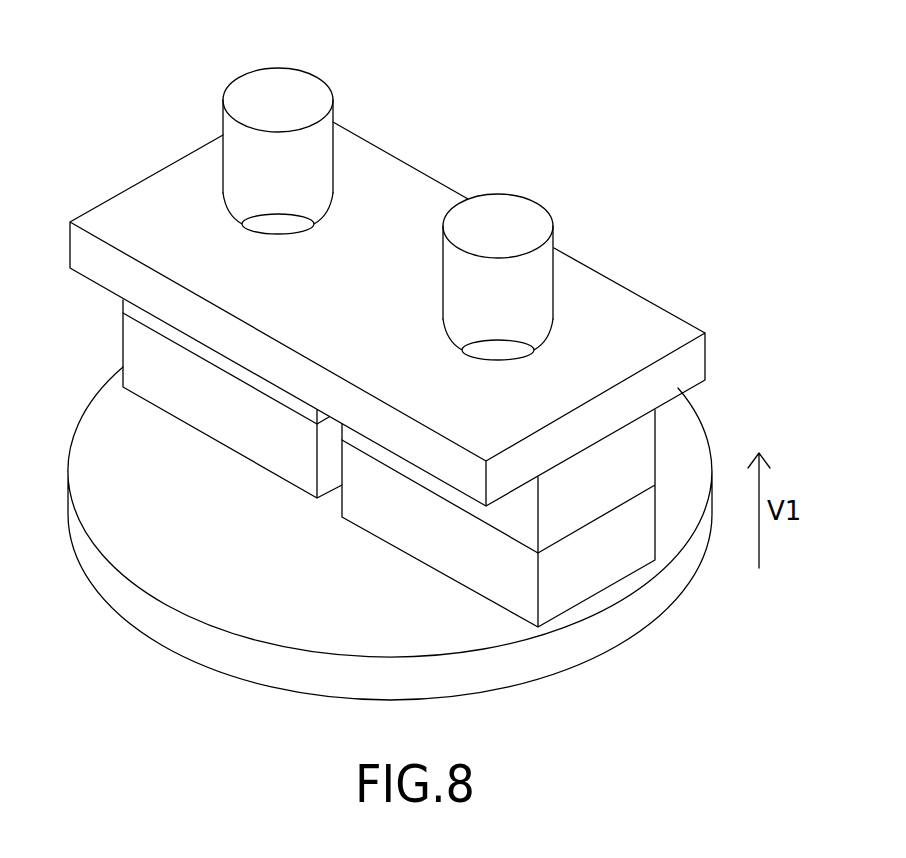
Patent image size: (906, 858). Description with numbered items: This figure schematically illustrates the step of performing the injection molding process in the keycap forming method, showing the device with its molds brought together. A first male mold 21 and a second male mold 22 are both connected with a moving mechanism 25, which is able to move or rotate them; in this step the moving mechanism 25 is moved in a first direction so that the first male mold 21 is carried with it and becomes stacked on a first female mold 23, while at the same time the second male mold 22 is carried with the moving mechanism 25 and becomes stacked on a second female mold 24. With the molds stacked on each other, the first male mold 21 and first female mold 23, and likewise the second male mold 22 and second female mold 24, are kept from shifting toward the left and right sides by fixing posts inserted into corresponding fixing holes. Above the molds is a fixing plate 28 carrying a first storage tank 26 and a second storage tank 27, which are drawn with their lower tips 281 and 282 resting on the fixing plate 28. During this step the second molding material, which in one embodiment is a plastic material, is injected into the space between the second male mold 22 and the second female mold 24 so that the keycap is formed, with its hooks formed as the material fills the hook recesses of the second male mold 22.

The first male mold 21 is at (223, 417).
The second male mold 22 is at (445, 545).
The first female mold 23 is at (183, 338).
The second female mold 24 is at (407, 465).
The moving mechanism 25 is at (97, 438).
The first storage tank 26 is at (298, 170).
The second storage tank 27 is at (517, 298).
The fixing plate 28 is at (627, 317).
The tip of first pressing member 281 is at (260, 235).
The tip of second pressing member 282 is at (483, 360).